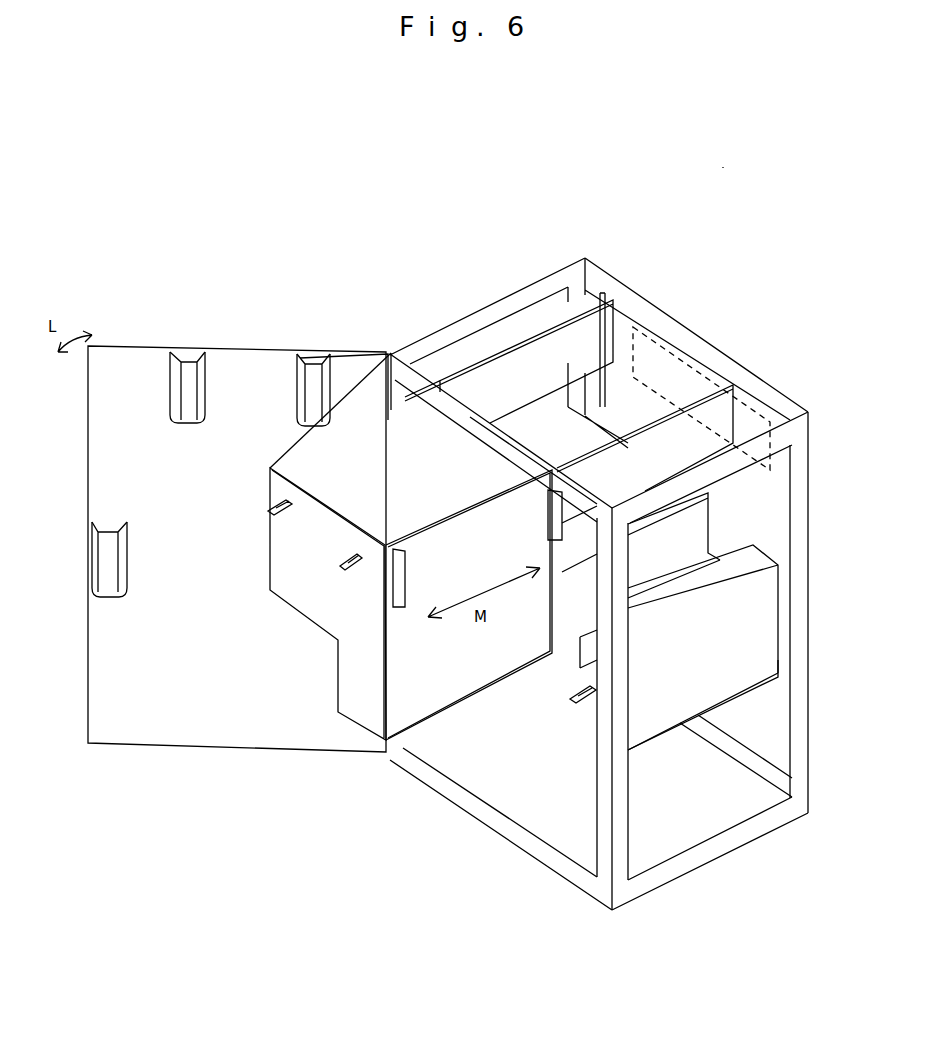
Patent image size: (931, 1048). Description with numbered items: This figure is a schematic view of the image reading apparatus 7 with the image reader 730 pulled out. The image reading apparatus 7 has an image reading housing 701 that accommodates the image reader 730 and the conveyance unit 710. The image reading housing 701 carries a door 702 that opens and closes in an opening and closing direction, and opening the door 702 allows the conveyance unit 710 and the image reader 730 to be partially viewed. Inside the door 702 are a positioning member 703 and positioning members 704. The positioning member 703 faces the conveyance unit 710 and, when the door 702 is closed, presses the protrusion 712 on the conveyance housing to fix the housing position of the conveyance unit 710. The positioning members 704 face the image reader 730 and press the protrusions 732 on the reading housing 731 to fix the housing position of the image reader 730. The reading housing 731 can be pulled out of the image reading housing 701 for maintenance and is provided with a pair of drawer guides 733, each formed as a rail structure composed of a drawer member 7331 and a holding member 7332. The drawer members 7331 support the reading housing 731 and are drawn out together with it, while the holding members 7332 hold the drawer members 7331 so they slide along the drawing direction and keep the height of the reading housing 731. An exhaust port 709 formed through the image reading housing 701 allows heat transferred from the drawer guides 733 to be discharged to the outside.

The image reading apparatus 7 is at (729, 160).
The image reading housing 701 is at (583, 258).
The door 702 is at (140, 348).
The positioning member 703 is at (103, 580).
The positioning members 704 is at (183, 405).
The exhaust port 709 is at (658, 355).
The conveyance unit 710 is at (547, 698).
The protrusion 712 is at (590, 692).
The image reader 730 is at (366, 672).
The reading housing 731 is at (378, 443).
The protrusions 732 is at (272, 510).
The drawer guide 733 is at (506, 338).
The drawer member 7331 is at (270, 467).
The holding member 7332 is at (614, 294).